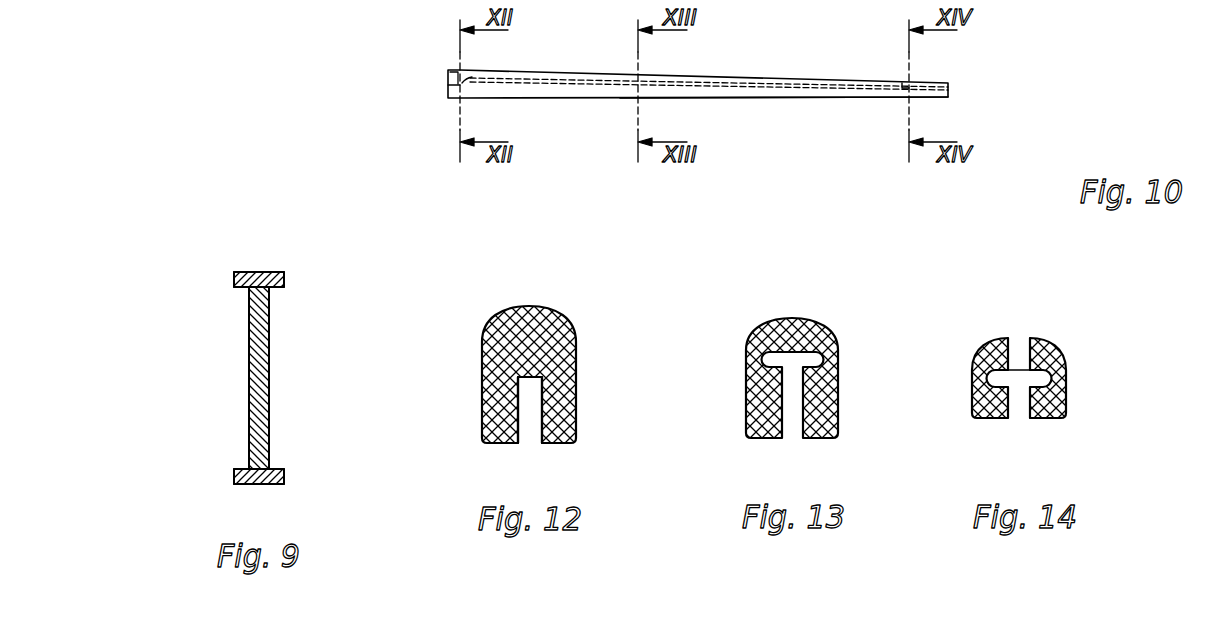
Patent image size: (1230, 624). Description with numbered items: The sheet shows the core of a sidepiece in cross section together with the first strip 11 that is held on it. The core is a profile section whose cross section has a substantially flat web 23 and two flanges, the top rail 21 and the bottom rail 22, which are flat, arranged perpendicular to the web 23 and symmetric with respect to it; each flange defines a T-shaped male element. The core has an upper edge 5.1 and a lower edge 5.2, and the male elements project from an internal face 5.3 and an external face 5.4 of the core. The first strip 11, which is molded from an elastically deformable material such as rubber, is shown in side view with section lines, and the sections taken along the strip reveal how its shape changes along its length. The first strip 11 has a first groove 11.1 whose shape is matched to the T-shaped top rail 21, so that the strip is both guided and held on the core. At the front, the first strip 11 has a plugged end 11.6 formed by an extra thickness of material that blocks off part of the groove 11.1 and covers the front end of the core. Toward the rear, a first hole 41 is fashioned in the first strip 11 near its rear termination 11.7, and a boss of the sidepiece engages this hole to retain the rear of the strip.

In FIG. 10, the first strip 11 is at (446, 100).
In FIG. 12, the first groove 11.1 is at (530, 428).
In FIG. 13, the first groove 11.1 is at (793, 431).
In FIG. 14, the first groove 11.1 is at (1019, 413).
In FIG. 10, the plugged end 11.6 is at (459, 84).
In FIG. 12, the plugged end 11.6 is at (533, 338).
In FIG. 10, the rear termination 11.7 is at (870, 98).
In FIG. 14, the rear termination 11.7 is at (1057, 345).
In FIG. 10, the first hole 41 is at (917, 74).
In FIG. 14, the first hole 41 is at (1019, 342).
In FIG. 9, the upper edge 5.1 is at (218, 270).
In FIG. 9, the lower edge 5.2 is at (218, 486).
In FIG. 9, the internal face 5.3 is at (236, 318).
In FIG. 9, the external face 5.4 is at (283, 318).
In FIG. 9, the top rail 21 is at (255, 282).
In FIG. 9, the bottom rail 22 is at (255, 484).
In FIG. 9, the web 23 is at (249, 378).